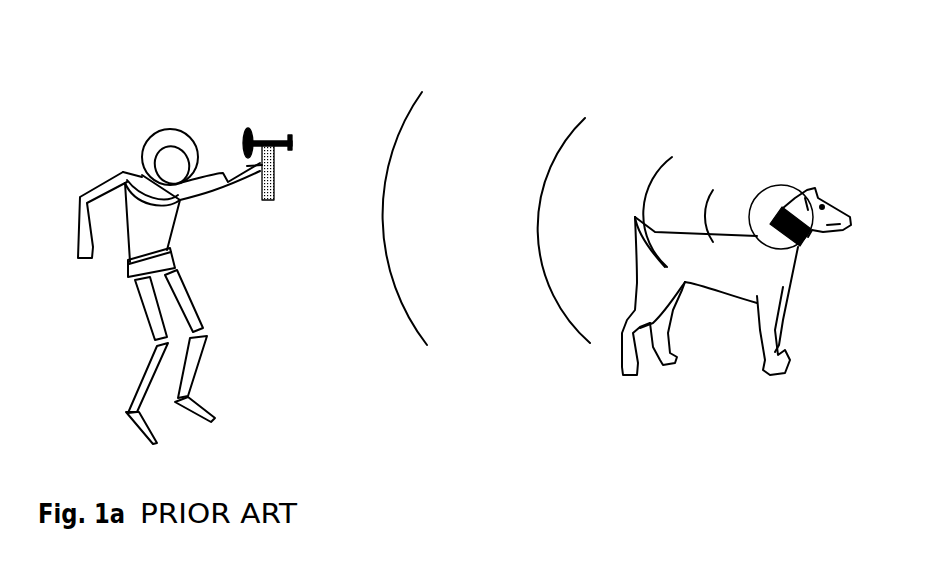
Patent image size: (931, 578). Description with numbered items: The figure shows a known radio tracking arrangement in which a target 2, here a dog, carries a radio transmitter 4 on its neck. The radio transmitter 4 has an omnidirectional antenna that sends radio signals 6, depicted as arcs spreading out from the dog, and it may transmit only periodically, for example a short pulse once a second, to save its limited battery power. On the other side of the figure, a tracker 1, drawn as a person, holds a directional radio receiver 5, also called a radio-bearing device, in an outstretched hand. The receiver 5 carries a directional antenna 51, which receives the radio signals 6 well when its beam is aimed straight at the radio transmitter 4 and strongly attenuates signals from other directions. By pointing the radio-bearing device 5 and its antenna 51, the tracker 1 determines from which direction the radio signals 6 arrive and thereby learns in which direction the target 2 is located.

The tracker 1 is at (123, 170).
The directional radio receiver 5 is at (273, 185).
The directional antenna 51 is at (292, 133).
The radio signals 6 is at (615, 145).
The target 2 is at (743, 307).
The radio transmitter 4 is at (807, 247).